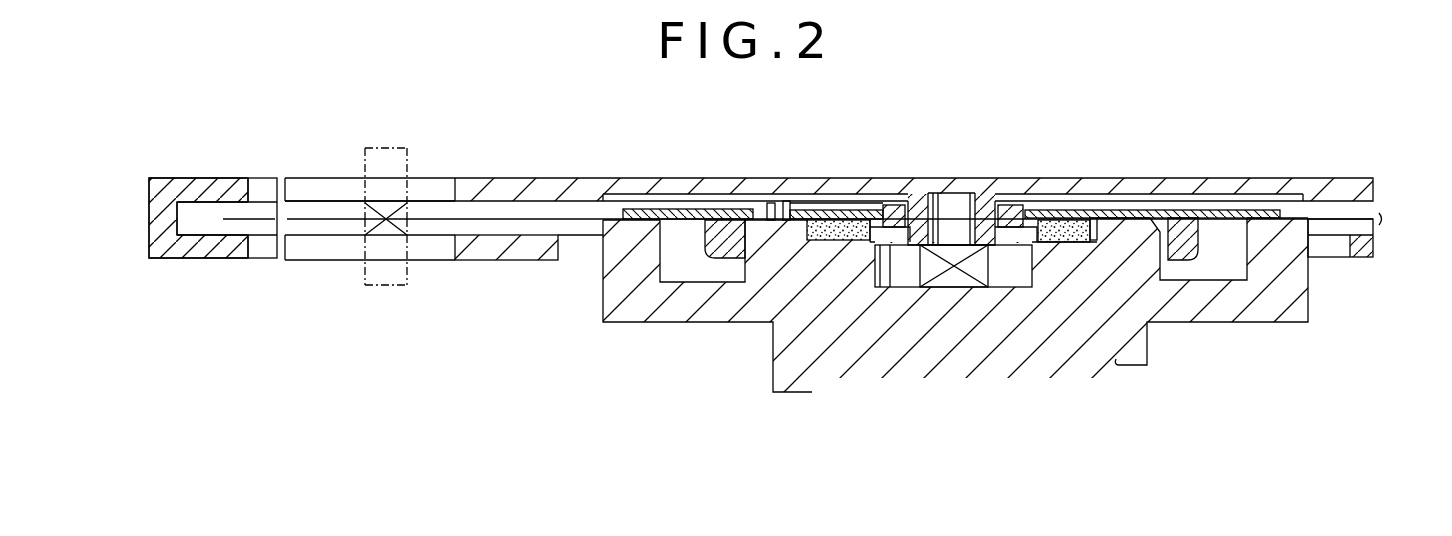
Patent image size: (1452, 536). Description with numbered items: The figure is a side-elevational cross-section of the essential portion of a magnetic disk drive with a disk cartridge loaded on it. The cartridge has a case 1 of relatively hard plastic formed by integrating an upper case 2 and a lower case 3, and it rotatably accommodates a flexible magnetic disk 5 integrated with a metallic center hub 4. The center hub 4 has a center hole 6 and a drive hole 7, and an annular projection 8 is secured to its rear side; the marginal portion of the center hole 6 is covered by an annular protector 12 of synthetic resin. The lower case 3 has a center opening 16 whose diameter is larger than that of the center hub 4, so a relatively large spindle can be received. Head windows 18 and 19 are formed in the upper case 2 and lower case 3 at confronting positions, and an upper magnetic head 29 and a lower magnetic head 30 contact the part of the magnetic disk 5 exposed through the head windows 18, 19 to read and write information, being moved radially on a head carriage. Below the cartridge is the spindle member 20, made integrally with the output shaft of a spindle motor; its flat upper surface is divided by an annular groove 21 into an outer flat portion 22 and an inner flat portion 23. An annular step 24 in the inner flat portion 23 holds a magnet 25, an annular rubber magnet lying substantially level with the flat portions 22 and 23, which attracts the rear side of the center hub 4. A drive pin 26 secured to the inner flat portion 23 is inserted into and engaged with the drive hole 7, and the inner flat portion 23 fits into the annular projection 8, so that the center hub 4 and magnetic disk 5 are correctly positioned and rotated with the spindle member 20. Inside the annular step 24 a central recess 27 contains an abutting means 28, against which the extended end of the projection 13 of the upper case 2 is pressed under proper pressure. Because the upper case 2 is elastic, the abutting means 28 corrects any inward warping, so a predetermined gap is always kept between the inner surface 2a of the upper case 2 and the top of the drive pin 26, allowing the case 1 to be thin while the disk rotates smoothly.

The case assembly 1 is at (222, 176).
The upper case 2 is at (485, 192).
The inner surface of the upper case 2a is at (695, 197).
The lower case 3 is at (488, 250).
The center hub 4 is at (642, 212).
The flexible magnetic disk 5 is at (530, 218).
The center hole 6 is at (1010, 205).
The drive hole 7 is at (770, 205).
The annular projection 8 is at (722, 243).
The annular protector 12 is at (894, 208).
The projection 13 is at (975, 217).
The center opening 16 is at (1330, 245).
The head window 18 is at (433, 190).
The head window 19 is at (433, 250).
The spindle member 20 is at (1158, 356).
The annular groove 21 is at (673, 272).
The outer flat portion 22 is at (603, 290).
The inner flat portion 23 is at (772, 232).
The annular step 24 is at (850, 242).
The magnet 25 is at (1068, 228).
The drive pin 26 is at (786, 205).
The central recess 27 is at (1025, 265).
The abutting means 28 is at (958, 275).
The upper magnetic head 29 is at (383, 148).
The lower magnetic head 30 is at (378, 288).